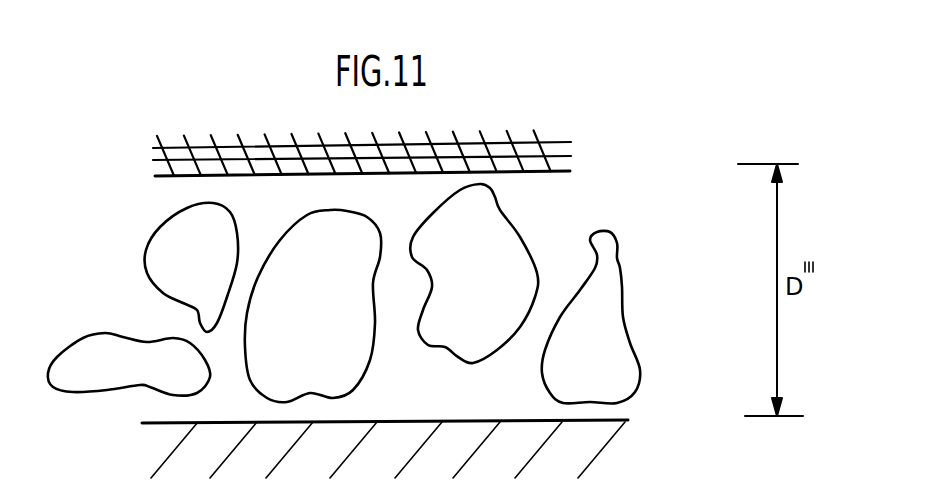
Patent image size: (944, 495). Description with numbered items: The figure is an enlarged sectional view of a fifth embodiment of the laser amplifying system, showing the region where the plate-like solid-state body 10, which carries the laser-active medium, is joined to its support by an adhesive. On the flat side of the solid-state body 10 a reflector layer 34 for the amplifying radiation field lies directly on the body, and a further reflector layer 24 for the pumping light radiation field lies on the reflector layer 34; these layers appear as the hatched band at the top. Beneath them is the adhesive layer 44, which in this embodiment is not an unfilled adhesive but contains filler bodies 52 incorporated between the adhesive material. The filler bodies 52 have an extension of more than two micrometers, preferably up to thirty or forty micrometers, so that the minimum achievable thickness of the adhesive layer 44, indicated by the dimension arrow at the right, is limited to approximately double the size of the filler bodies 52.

The solid-state body 10 is at (511, 134).
The reflector layer 24 is at (558, 163).
The reflector layer 34 is at (555, 148).
The adhesive layer 44 is at (485, 390).
The filler bodies 52 is at (617, 385).